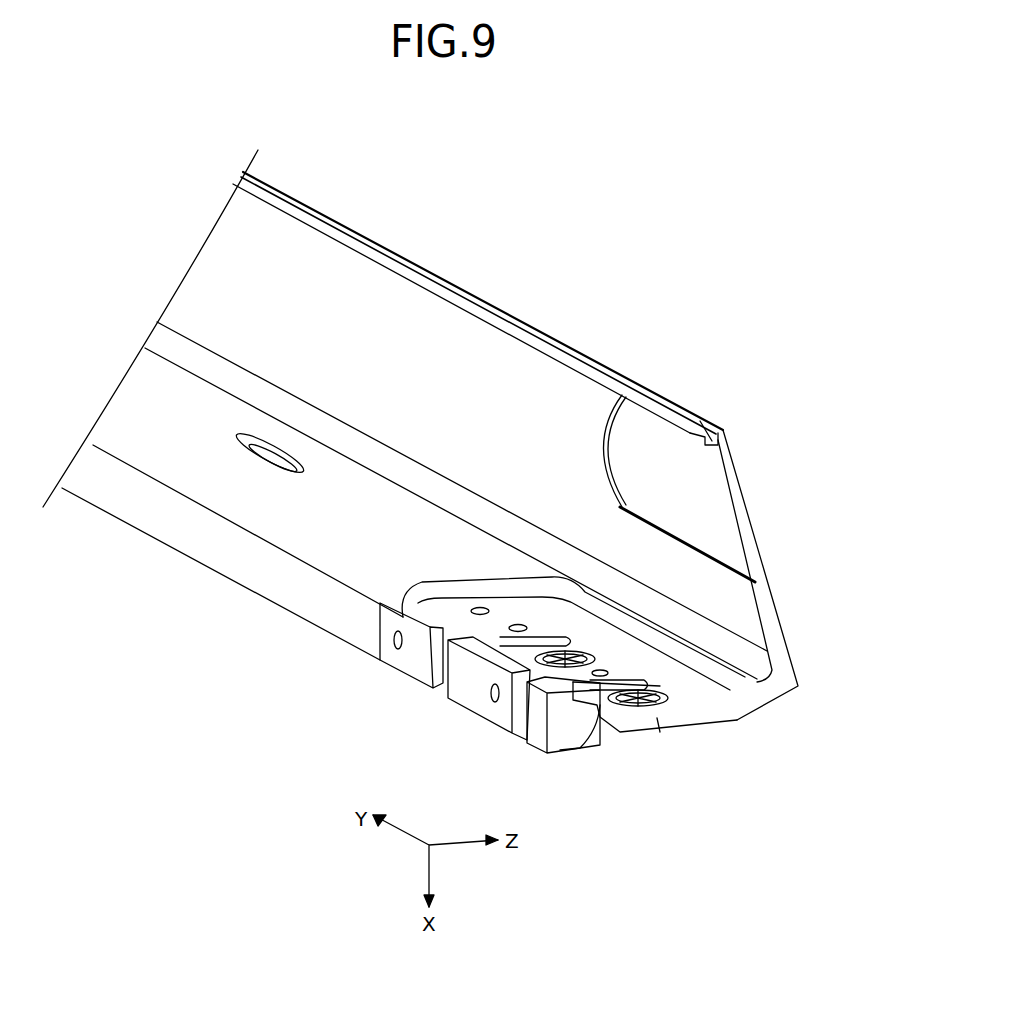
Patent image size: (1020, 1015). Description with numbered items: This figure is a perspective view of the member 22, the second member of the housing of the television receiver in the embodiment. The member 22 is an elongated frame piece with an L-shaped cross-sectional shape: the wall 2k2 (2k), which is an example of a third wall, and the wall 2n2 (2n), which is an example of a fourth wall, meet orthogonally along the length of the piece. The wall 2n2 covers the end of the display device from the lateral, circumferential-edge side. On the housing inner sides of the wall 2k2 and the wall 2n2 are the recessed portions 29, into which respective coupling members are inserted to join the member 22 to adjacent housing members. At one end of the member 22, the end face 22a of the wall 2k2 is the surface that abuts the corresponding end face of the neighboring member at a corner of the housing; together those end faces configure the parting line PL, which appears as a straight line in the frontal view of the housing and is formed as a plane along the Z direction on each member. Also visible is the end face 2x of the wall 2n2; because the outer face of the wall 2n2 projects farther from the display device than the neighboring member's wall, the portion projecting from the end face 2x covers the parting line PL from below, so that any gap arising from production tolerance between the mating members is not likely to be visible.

The member 22 is at (461, 480).
The wall 2k2 is at (462, 409).
The wall 2k is at (385, 288).
The wall 2n2 is at (409, 513).
The wall 2n is at (303, 533).
The recessed portion 29 is at (705, 484).
The parting line PL is at (785, 570).
The end face 22a is at (765, 610).
The end face 2x is at (653, 720).